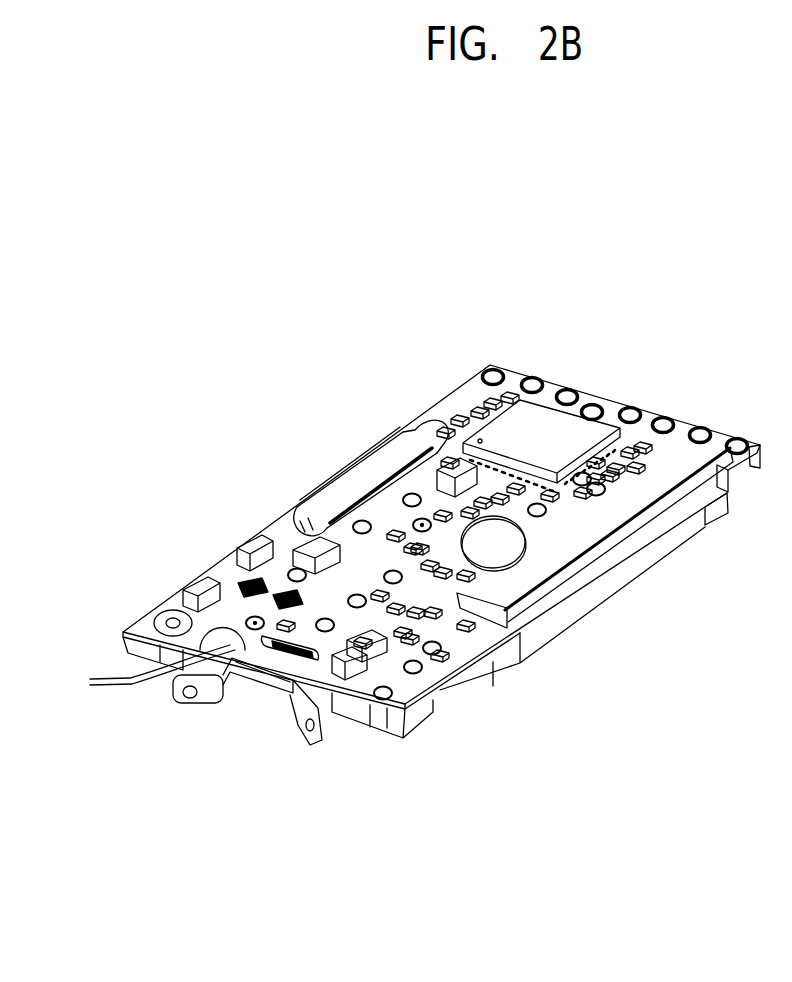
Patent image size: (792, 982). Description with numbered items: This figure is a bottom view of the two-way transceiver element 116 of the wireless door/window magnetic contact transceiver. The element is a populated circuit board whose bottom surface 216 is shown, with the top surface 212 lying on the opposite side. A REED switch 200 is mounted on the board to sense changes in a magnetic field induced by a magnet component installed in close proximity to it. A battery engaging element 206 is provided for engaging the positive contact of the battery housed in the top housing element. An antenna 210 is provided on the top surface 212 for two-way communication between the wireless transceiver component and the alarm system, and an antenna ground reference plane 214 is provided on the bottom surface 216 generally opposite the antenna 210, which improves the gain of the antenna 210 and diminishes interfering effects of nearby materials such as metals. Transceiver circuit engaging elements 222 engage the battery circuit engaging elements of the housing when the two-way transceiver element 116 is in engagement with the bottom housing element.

The two-way transceiver element 116 is at (582, 346).
The REED switch 200 is at (343, 495).
The battery engaging element 206 is at (263, 680).
The antenna 210 is at (543, 640).
The top surface 212 is at (447, 697).
The antenna ground reference plane 214 is at (538, 552).
The bottom surface 216 is at (682, 425).
The transceiver circuit engaging elements 222 is at (139, 667).